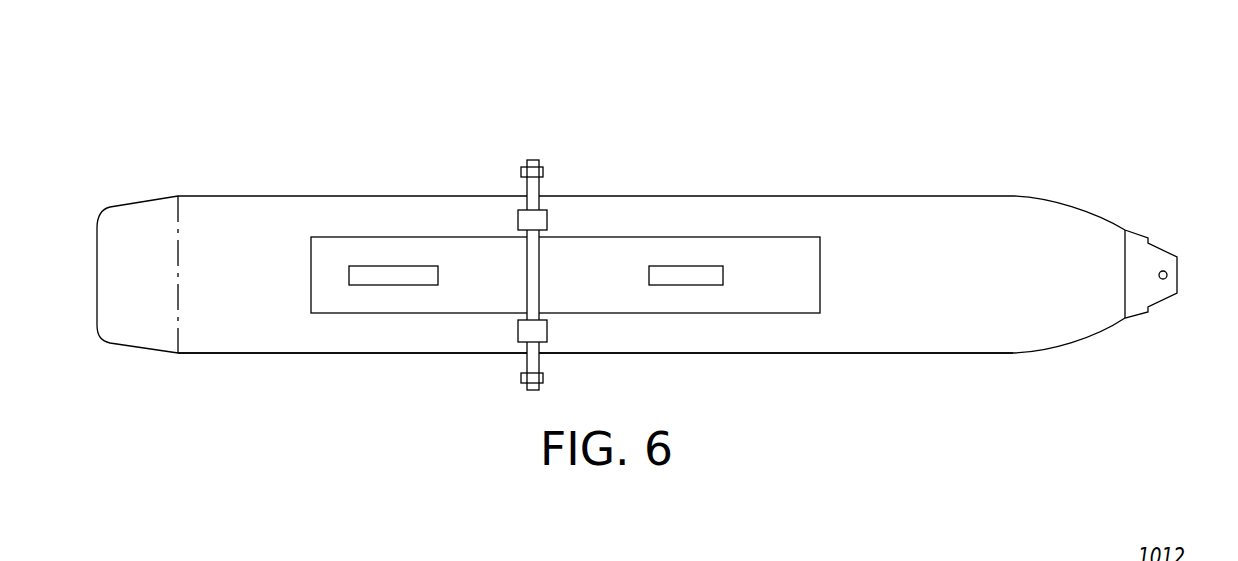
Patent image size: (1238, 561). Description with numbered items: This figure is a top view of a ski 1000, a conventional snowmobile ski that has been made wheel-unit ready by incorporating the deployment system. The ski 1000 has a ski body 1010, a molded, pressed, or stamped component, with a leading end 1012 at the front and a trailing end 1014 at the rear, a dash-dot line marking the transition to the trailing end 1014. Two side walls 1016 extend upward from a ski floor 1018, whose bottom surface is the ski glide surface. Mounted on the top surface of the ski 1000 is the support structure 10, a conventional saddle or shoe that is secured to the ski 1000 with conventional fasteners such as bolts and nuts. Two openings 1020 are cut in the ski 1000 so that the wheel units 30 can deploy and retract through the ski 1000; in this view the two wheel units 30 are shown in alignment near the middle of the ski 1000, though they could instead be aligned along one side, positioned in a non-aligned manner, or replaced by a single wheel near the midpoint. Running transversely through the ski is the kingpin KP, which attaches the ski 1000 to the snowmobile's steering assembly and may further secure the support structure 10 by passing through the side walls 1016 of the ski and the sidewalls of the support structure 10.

The ski 1000 is at (652, 233).
The ski body 1010 is at (203, 222).
The leading end 1012 is at (1158, 260).
The trailing end 1014 is at (130, 325).
The side walls 1016 is at (818, 197).
The ski floor 1018 is at (247, 333).
The openings 1020 is at (365, 286).
The support structure 10 is at (332, 235).
The wheel units 30 is at (397, 270).
The kingpin KP is at (527, 195).